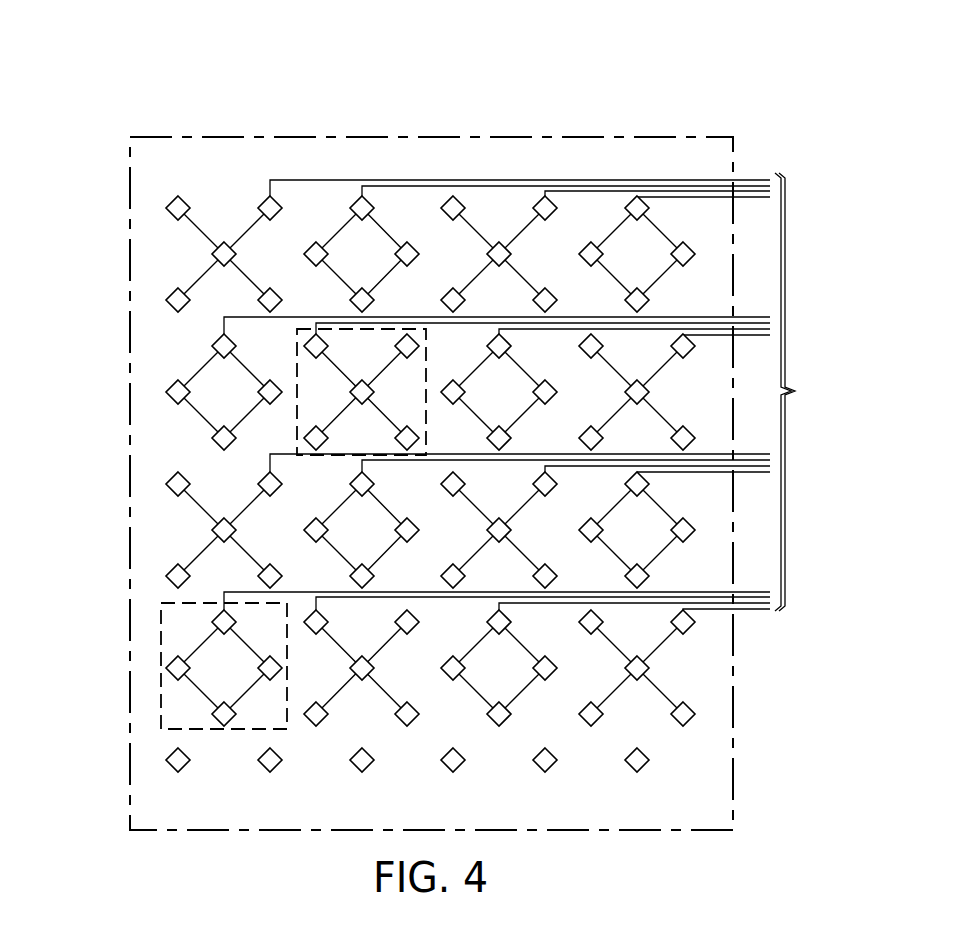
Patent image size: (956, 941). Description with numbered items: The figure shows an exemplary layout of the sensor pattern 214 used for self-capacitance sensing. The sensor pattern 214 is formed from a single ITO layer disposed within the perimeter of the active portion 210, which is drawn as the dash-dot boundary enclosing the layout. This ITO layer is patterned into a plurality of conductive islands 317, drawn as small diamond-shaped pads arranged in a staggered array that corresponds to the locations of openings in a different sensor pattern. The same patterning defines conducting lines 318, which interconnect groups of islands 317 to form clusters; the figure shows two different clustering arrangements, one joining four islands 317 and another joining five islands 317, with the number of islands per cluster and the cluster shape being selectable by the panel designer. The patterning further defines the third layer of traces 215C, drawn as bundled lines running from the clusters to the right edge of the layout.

The active portion 210 is at (650, 818).
The sensor pattern 214 is at (206, 72).
The third layer of traces 215C is at (544, 392).
The conductive islands 317 is at (170, 204).
The conducting lines 318 is at (387, 232).